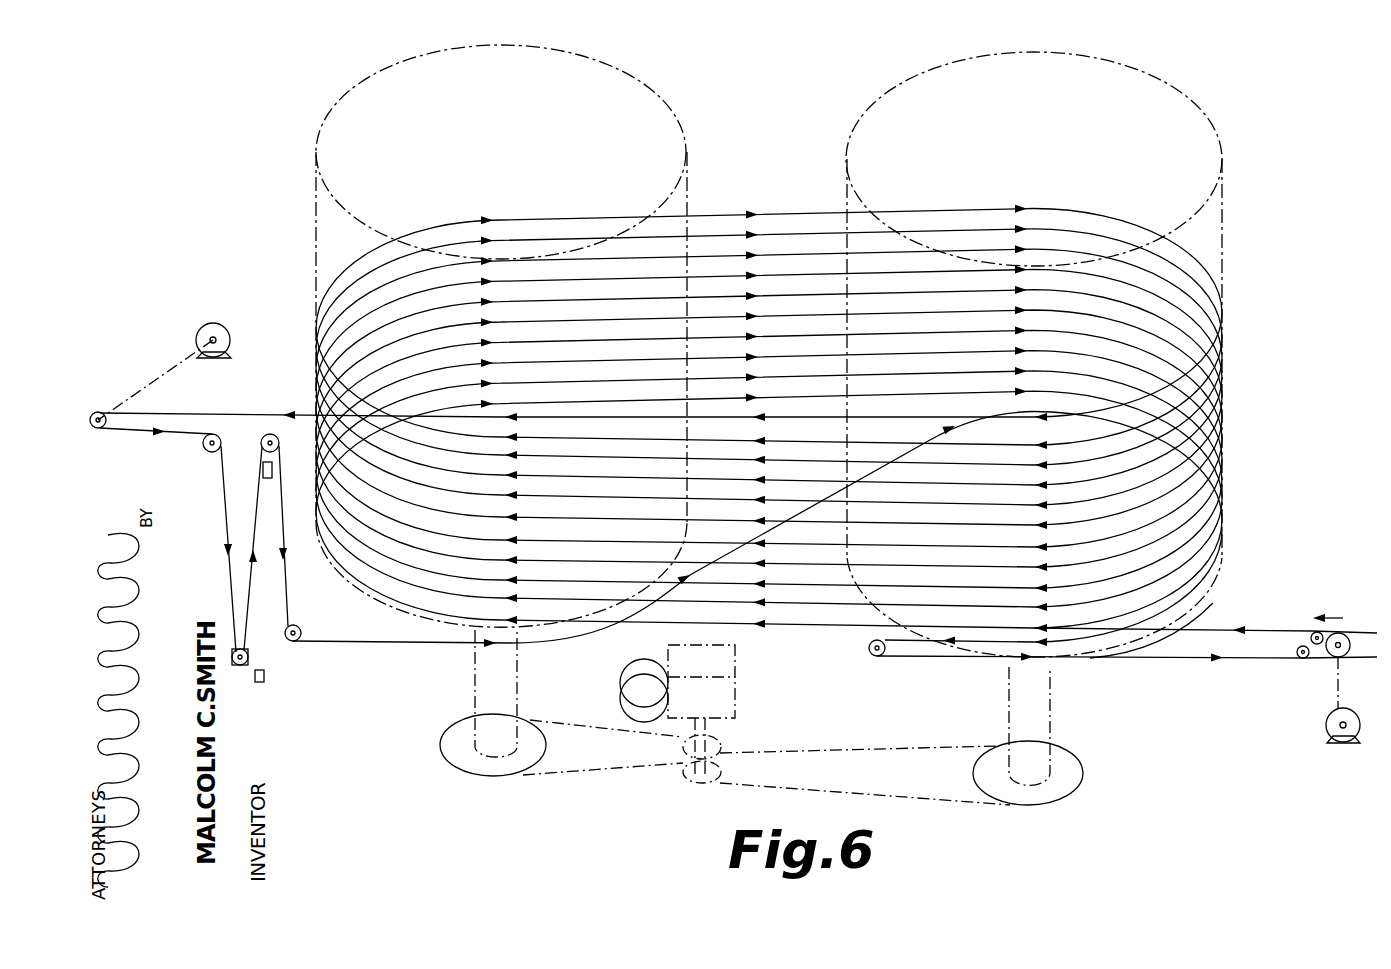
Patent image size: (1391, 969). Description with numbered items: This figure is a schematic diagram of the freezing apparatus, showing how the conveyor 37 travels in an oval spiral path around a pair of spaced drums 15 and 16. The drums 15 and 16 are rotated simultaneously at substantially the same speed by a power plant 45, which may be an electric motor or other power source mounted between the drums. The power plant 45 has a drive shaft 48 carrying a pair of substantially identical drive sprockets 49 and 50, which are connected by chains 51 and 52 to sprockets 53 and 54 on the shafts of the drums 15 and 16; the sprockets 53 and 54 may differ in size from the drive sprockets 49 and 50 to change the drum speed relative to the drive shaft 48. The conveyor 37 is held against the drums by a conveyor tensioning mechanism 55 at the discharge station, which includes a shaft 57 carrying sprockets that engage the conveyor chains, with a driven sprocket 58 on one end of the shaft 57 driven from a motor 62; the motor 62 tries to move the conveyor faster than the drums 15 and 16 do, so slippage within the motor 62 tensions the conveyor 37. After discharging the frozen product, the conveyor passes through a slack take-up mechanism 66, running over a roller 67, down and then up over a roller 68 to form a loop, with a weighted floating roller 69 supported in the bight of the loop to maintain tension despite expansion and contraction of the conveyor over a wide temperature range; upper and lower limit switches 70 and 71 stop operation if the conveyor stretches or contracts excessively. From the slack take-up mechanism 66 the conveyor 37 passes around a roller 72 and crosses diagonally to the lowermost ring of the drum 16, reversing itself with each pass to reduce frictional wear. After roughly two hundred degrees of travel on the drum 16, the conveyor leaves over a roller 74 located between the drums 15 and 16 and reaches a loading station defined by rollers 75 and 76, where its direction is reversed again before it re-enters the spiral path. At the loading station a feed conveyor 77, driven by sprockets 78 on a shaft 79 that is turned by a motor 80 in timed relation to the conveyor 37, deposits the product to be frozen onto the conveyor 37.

The drum 15 is at (301, 190).
The drum 16 is at (1226, 240).
The conveyor 37 is at (790, 627).
The power plant 45 is at (627, 678).
The drive shaft 48 is at (705, 728).
The drive sprocket 49 is at (722, 745).
The drive sprocket 50 is at (683, 777).
The chain 51 is at (586, 730).
The chain 52 is at (884, 751).
The sprocket 53 is at (473, 773).
The sprocket 54 is at (1070, 758).
The conveyor tensioning mechanism 55 is at (123, 372).
The shaft 57 is at (97, 430).
The driven sprocket 58 is at (300, 402).
The motor 62 is at (236, 305).
The slack take-up mechanism 66 is at (216, 516).
The roller 67 is at (204, 448).
The roller 68 is at (263, 435).
The floating roller 69 is at (249, 657).
The upper limit switch 70 is at (263, 473).
The lower limit switch 71 is at (265, 677).
The roller 72 is at (322, 609).
The roller 74 is at (873, 657).
The roller 75 is at (1298, 657).
The roller 76 is at (1311, 633).
The feed conveyor 77 is at (1367, 630).
The sprocket 78 is at (1350, 647).
The shaft 79 is at (1337, 683).
The motor 80 is at (1328, 725).